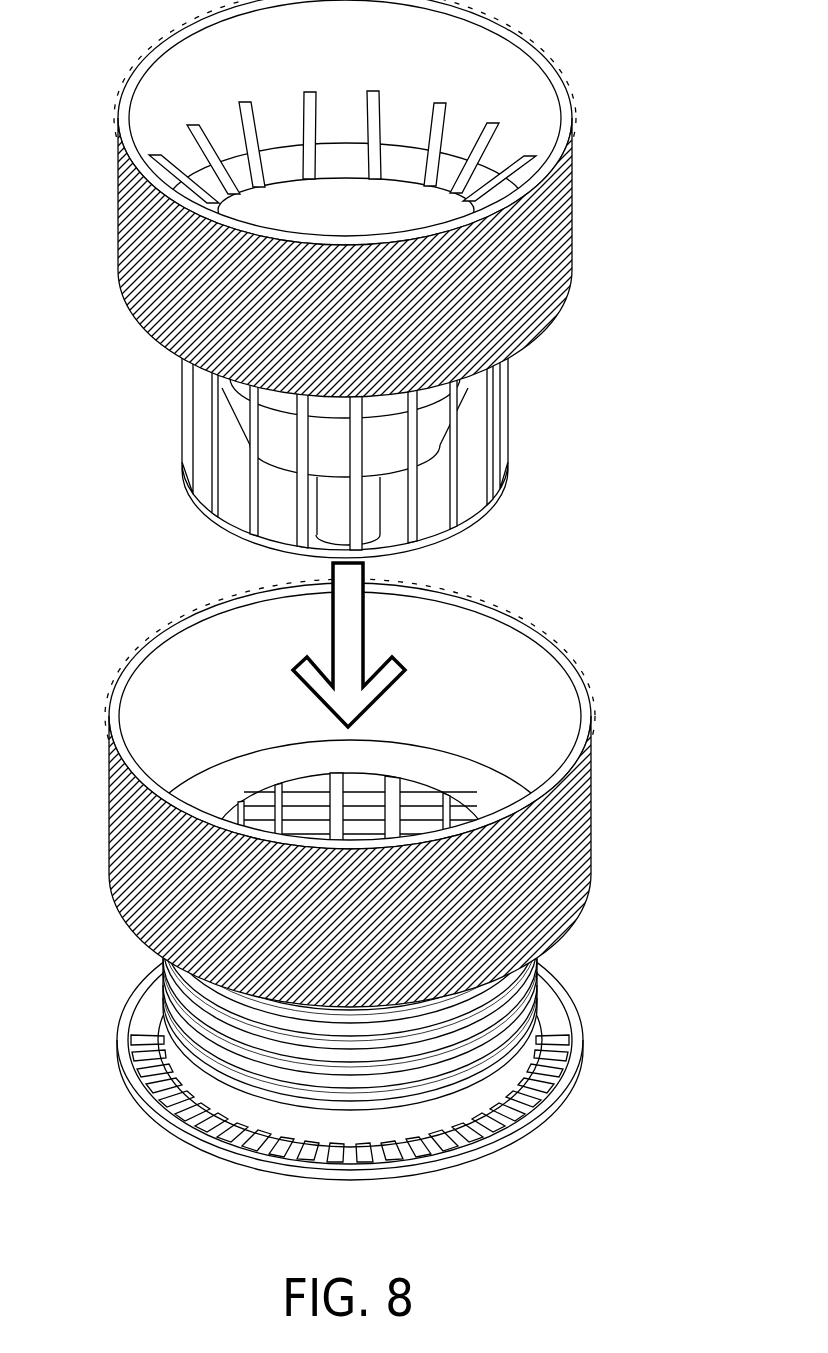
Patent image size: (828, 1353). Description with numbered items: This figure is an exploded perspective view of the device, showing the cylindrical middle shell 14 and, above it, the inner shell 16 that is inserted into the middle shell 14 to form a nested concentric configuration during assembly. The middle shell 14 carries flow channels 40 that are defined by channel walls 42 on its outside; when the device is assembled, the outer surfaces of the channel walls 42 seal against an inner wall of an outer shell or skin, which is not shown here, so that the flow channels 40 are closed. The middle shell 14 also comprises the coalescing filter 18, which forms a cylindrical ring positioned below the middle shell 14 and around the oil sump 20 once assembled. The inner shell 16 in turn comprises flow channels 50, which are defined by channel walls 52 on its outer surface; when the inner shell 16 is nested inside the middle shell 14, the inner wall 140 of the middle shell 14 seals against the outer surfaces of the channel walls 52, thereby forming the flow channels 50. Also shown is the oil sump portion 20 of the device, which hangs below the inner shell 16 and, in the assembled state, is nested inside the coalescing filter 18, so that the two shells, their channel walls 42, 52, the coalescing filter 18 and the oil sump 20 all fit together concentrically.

The inner shell 16 is at (405, 279).
The middle shell 14 is at (373, 879).
The oil sump 20 is at (482, 446).
The coalescing filter 18 is at (380, 790).
The flow channels 50 is at (392, 233).
The channel walls 52 is at (307, 234).
The flow channels 40 is at (211, 960).
The channel walls 42 is at (515, 925).
The inner wall 140 is at (178, 717).